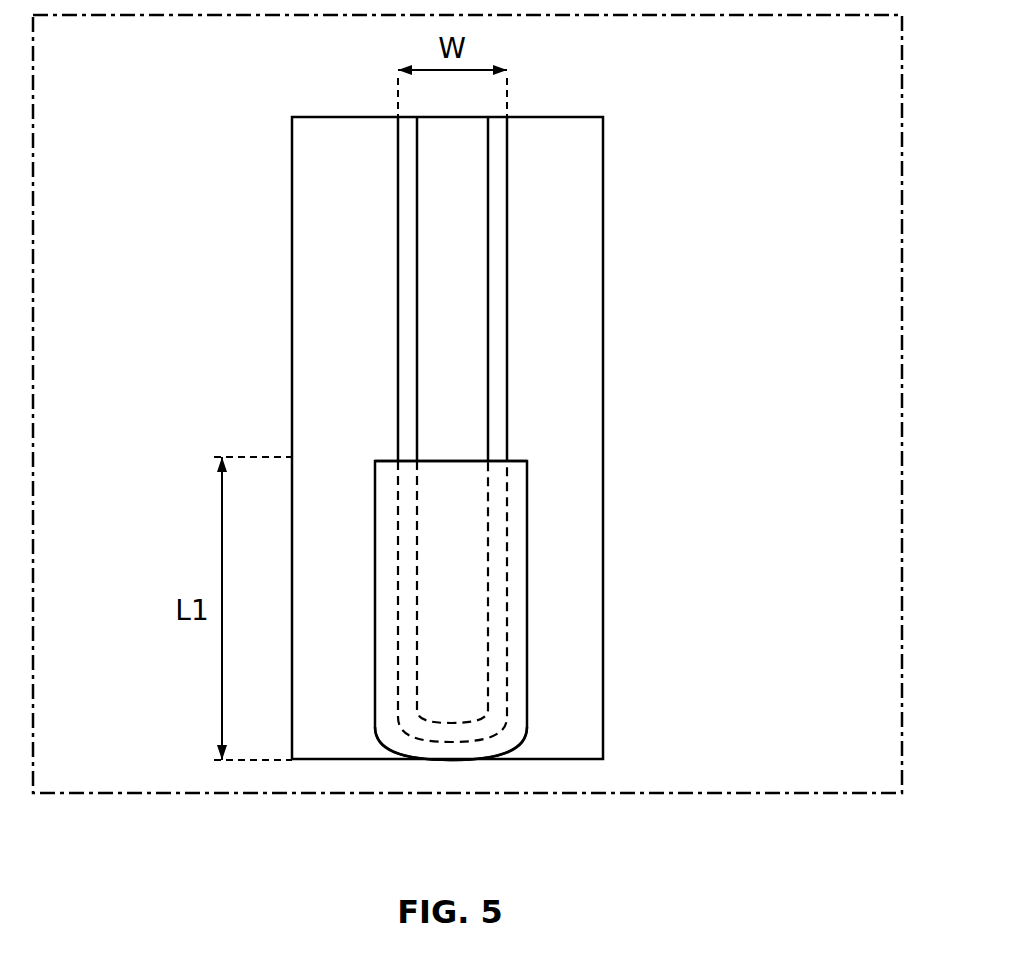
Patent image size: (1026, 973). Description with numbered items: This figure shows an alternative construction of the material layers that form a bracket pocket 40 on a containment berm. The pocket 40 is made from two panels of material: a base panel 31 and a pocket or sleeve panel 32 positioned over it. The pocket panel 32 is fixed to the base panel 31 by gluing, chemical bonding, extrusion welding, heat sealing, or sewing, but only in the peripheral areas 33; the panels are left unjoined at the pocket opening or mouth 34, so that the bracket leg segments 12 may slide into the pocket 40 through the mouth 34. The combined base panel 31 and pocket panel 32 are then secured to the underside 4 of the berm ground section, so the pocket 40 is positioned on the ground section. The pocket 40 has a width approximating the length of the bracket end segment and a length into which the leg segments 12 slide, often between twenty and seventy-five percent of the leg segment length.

The underside 4 is at (662, 450).
The leg segments 12 is at (495, 343).
The base panel 31 is at (592, 697).
The pocket panel 32 is at (520, 623).
The peripheral areas 33 is at (390, 747).
The pocket opening or mouth 34 is at (510, 460).
The pocket 40 is at (557, 736).